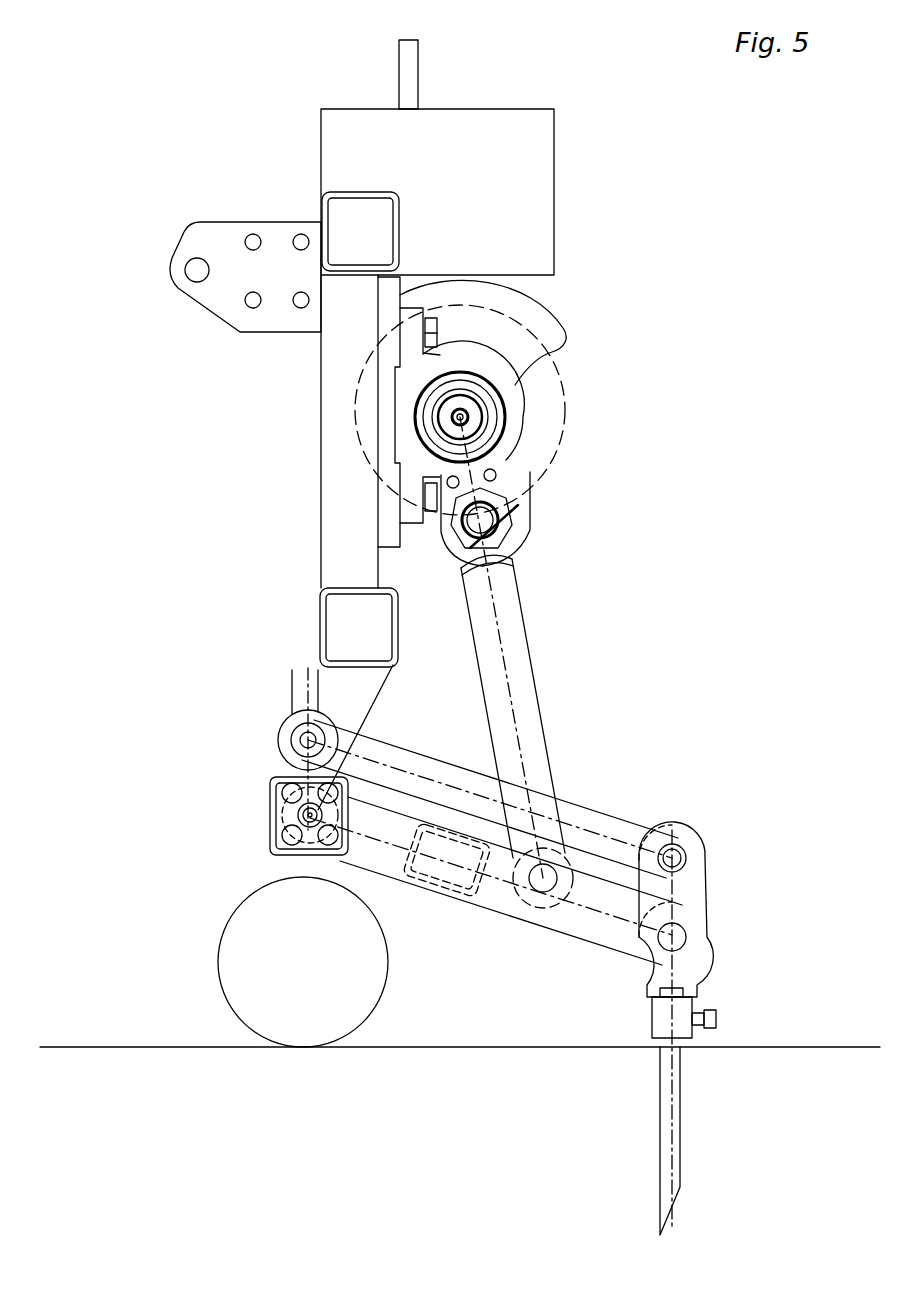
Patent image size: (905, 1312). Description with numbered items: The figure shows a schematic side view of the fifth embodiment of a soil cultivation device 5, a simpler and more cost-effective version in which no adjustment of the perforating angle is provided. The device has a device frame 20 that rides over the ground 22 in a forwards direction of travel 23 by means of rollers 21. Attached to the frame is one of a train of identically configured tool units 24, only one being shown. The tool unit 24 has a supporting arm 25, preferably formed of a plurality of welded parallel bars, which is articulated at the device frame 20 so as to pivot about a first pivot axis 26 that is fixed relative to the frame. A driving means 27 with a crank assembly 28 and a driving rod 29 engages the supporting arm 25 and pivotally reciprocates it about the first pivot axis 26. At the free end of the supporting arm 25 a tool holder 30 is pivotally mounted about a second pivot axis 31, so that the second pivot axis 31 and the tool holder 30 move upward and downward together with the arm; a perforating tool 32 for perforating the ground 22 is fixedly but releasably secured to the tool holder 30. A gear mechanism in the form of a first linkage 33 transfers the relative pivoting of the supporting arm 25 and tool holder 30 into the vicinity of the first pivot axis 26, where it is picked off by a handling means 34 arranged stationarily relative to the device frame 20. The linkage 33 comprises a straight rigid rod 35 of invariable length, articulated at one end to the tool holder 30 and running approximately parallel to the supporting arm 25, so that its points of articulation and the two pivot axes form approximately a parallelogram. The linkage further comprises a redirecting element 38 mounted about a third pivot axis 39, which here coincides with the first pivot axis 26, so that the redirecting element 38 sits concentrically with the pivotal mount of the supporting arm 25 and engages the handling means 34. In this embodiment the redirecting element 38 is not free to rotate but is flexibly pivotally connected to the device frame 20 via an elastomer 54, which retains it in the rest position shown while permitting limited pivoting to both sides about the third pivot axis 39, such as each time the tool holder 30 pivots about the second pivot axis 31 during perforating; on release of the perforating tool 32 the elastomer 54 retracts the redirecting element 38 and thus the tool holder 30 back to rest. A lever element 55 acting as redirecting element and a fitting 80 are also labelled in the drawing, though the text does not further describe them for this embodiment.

The soil cultivation device 5 is at (655, 316).
The device frame 20 is at (320, 501).
The rollers 21 is at (230, 990).
The ground 22 is at (450, 1067).
The forwards direction of travel 23 is at (230, 538).
The tool unit 24 is at (695, 800).
The supporting arm 25 is at (585, 930).
The first pivot axis 26 is at (282, 810).
The driving means 27 is at (582, 420).
The crank assembly 28 is at (515, 440).
The driving rod 29 is at (520, 647).
The tool holder 30 is at (698, 885).
The second pivot axis 31 is at (677, 942).
The perforating tool 32 is at (683, 1102).
The first linkage 33 is at (607, 806).
The handling means 34 is at (257, 805).
The rigid rod 35 is at (575, 810).
The redirecting element 38 is at (348, 726).
The third pivot axis 39 is at (310, 822).
The elastomer 54 is at (282, 810).
The lever element 55 is at (280, 725).
The coupling 80 is at (638, 1008).